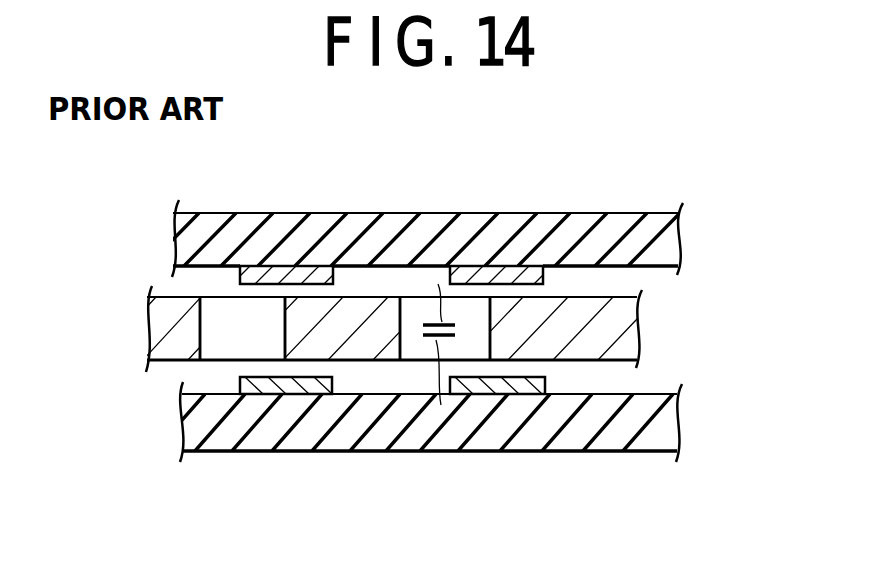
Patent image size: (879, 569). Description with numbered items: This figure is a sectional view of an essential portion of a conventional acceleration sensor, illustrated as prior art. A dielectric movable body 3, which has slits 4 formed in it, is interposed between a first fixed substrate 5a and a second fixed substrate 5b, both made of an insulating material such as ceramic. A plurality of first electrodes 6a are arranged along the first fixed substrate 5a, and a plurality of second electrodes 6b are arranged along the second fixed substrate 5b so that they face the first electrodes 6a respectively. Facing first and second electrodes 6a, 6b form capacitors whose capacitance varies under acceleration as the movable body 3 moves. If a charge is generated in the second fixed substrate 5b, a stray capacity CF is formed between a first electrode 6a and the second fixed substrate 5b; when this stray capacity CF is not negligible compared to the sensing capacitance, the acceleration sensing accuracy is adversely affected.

The dielectric movable body 3 is at (623, 336).
The slits 4 is at (415, 320).
The first fixed substrate 5a is at (618, 230).
The second fixed substrate 5b is at (643, 432).
The first electrodes 6a is at (300, 277).
The second electrodes 6b is at (303, 388).
The stray capacity CF is at (423, 340).